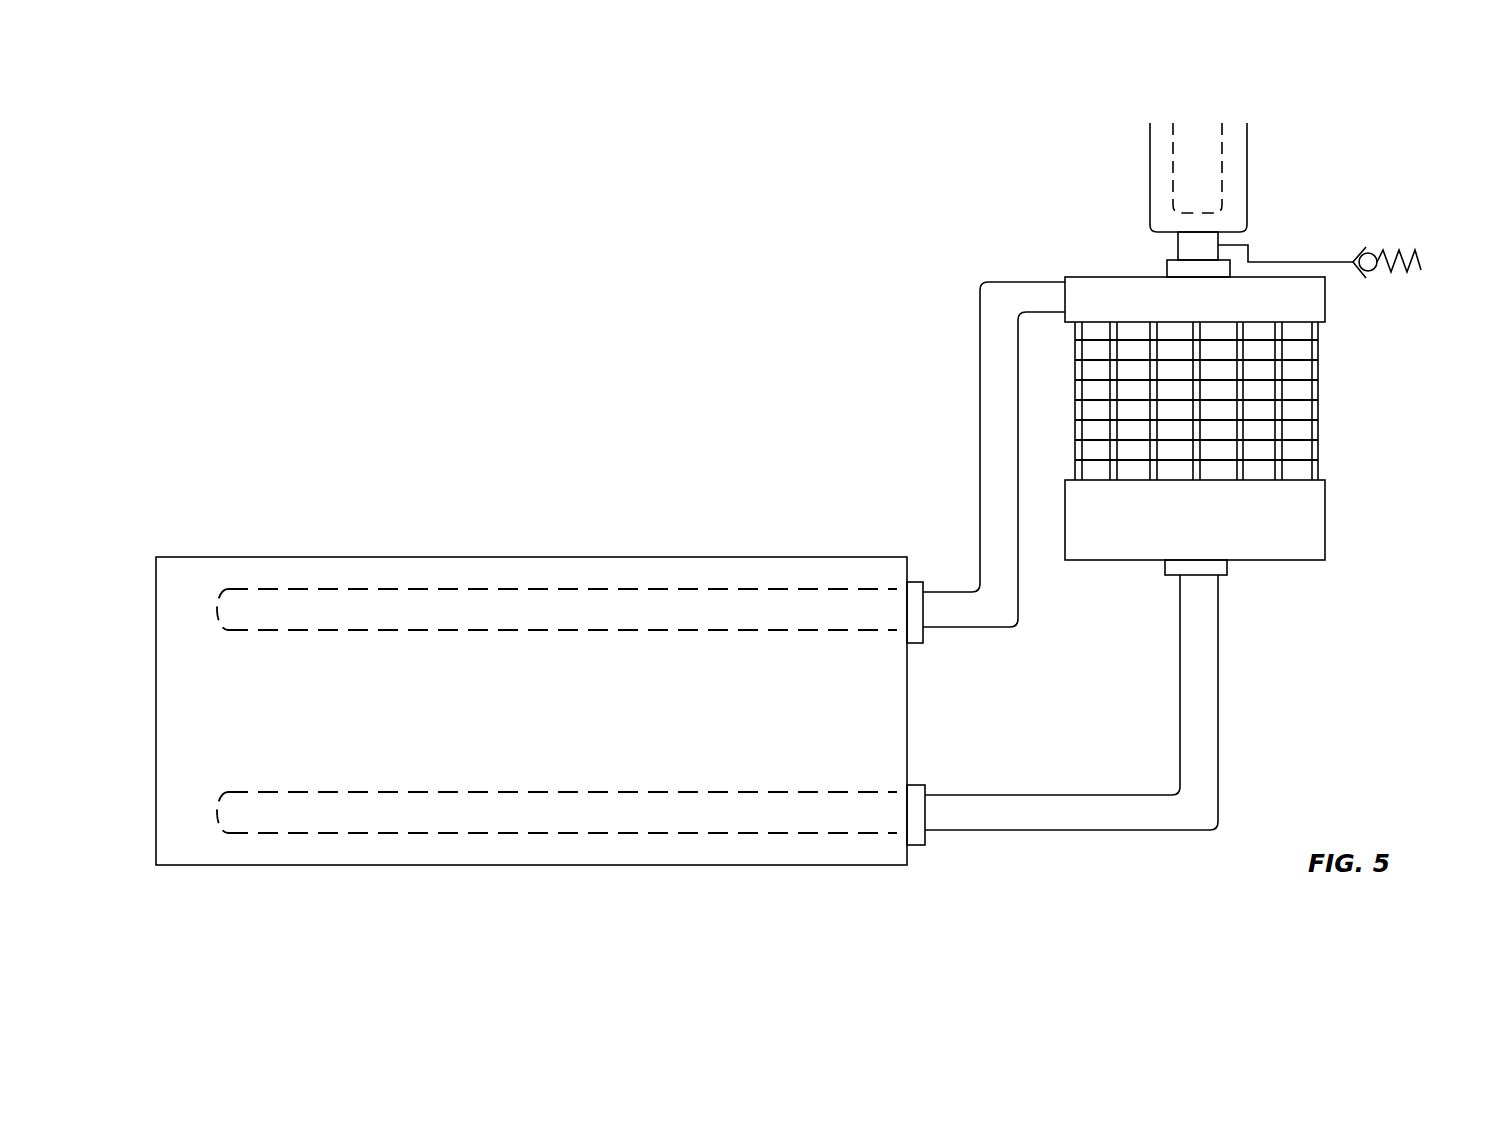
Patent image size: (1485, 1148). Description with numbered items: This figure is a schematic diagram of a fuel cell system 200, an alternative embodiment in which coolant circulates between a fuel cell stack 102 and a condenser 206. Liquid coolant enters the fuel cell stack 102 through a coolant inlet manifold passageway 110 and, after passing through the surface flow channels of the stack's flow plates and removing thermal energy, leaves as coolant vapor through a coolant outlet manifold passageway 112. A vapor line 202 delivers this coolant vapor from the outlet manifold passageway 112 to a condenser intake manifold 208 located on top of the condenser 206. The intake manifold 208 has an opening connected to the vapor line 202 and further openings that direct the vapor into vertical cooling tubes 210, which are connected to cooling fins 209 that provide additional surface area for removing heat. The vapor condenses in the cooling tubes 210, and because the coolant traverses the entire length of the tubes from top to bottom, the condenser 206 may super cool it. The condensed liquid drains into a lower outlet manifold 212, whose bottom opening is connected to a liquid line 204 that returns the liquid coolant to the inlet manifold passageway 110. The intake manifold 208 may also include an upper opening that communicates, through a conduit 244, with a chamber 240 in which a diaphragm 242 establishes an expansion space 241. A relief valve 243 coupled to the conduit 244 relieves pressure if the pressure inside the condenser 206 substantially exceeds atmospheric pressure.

The fuel cell system 200 is at (512, 430).
The fuel cell stack 102 is at (490, 552).
The coolant outlet manifold passageway 112 is at (327, 600).
The coolant inlet manifold passageway 110 is at (288, 830).
The vapor line 202 is at (952, 592).
The liquid line 204 is at (1040, 832).
The condenser 206 is at (1169, 406).
The condenser intake manifold 208 is at (1325, 302).
The cooling fins 209 is at (1103, 367).
The vertical cooling tubes 210 is at (1313, 422).
The lower outlet manifold 212 is at (1123, 560).
The chamber 240 is at (1150, 190).
The expansion space 241 is at (1197, 213).
The diaphragm 242 is at (1220, 207).
The relief valve 243 is at (1397, 267).
The conduit 244 is at (1177, 245).